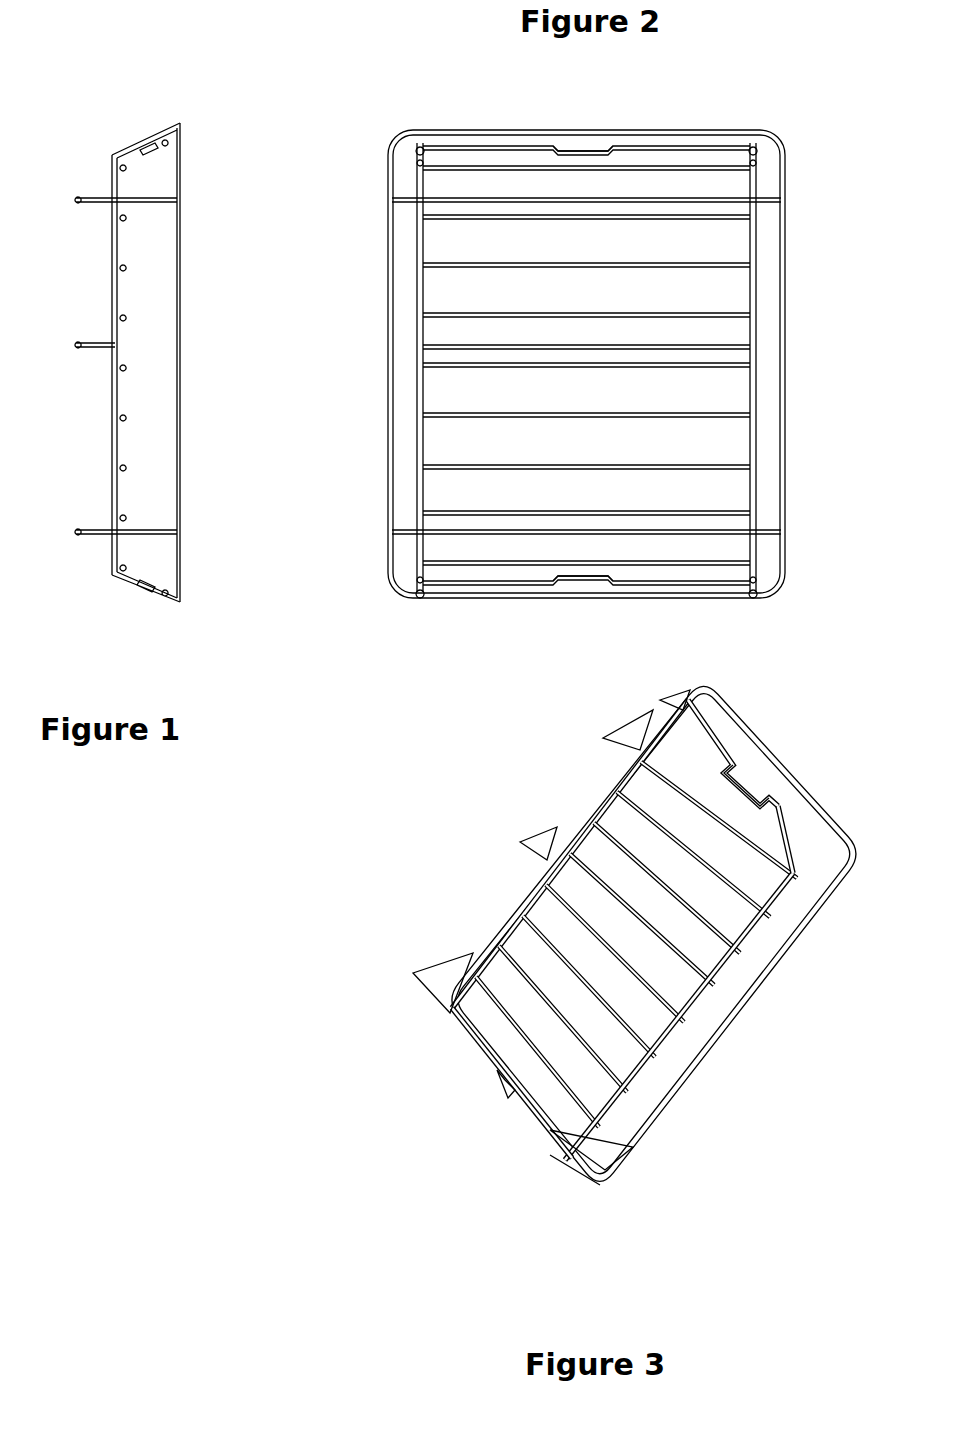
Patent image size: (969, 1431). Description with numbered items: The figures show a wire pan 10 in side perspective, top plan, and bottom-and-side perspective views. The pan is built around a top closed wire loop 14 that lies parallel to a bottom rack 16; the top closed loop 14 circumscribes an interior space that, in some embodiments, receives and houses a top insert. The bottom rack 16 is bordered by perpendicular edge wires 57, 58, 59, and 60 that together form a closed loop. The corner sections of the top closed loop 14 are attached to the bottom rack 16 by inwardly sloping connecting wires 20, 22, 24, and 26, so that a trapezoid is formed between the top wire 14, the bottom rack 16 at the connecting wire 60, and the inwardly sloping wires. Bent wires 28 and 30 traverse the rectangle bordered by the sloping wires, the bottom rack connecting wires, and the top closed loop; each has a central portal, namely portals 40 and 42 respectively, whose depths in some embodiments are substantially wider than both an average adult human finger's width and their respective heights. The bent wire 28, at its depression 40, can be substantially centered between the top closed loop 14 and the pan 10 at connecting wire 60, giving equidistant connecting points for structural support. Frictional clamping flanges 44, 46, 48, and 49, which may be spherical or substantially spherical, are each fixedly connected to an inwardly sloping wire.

In FIG. 1, the wire pan 10 is at (150, 142).
In FIG. 2, the wire pan 10 is at (393, 240).
In FIG. 3, the wire pan 10 is at (497, 897).
In FIG. 1, the top closed wire loop 14 is at (180, 270).
In FIG. 2, the top closed wire loop 14 is at (790, 262).
In FIG. 3, the top closed wire loop 14 is at (822, 800).
In FIG. 1, the bottom rack 16 is at (115, 400).
In FIG. 2, the bottom rack 16 is at (755, 375).
In FIG. 3, the bottom rack 16 is at (715, 968).
In FIG. 1, the inwardly sloping wire 20 is at (127, 150).
In FIG. 3, the inwardly sloping wire 20 is at (673, 697).
In FIG. 3, the connecting sloping wire 22 is at (808, 868).
In FIG. 1, the inwardly sloping wire 24 is at (138, 590).
In FIG. 3, the inwardly sloping wire 24 is at (425, 1012).
In FIG. 3, the connecting sloping wire 26 is at (565, 1178).
In FIG. 2, the bent wire 28 is at (668, 145).
In FIG. 3, the bent wire 28 is at (723, 728).
In FIG. 2, the bent wire 30 is at (510, 592).
In FIG. 3, the bent wire 30 is at (527, 1120).
In FIG. 2, the central portal 40 is at (585, 150).
In FIG. 3, the central portal 40 is at (758, 780).
In FIG. 2, the central portal 42 is at (583, 590).
In FIG. 3, the central portal 42 is at (497, 1090).
In FIG. 2, the frictional clamping flange 44 is at (420, 148).
In FIG. 2, the frictional clamping flange 46 is at (755, 148).
In FIG. 2, the frictional clamping flange 48 is at (420, 588).
In FIG. 2, the frictional clamping flange 49 is at (755, 590).
In FIG. 2, the perpendicular edge wire 57 is at (415, 380).
In FIG. 2, the perpendicular edge wire 58 is at (440, 567).
In FIG. 2, the perpendicular edge wire 59 is at (755, 447).
In FIG. 2, the perpendicular edge wire 60 is at (497, 163).